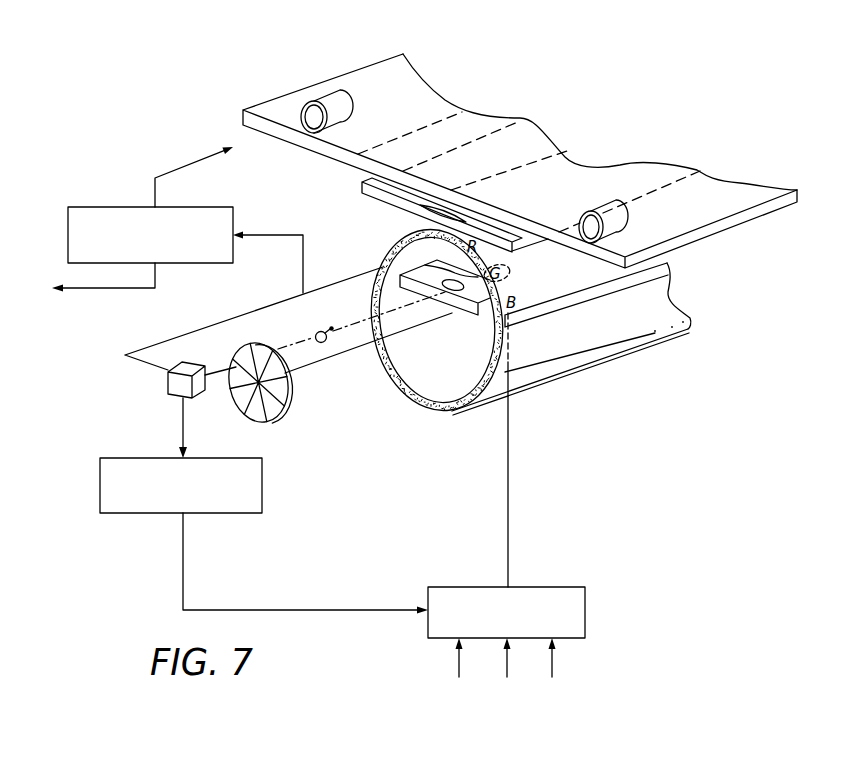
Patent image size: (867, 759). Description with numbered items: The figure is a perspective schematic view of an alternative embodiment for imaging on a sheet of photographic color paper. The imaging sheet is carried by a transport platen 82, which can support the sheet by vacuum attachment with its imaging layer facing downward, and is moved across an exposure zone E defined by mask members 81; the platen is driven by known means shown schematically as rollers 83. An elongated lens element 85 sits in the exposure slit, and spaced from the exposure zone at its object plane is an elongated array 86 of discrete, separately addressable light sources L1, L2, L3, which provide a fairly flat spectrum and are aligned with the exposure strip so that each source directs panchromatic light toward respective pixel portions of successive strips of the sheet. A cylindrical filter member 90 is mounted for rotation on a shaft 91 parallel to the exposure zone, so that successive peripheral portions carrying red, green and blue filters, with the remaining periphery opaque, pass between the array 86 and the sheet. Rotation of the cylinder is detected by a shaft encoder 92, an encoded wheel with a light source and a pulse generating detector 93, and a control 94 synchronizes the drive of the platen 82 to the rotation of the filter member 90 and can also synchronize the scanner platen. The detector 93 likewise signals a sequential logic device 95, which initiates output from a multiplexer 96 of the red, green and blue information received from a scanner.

The mask members 81 is at (362, 187).
The transport platen 82 is at (742, 190).
The rollers 83 is at (348, 114).
The elongated lens element 85 is at (440, 203).
The elongated array 86 is at (428, 298).
The cylindrical filter member 90 is at (458, 411).
The shaft 91 is at (320, 343).
The shaft encoder 92 is at (272, 330).
The pulse generating detector 93 is at (195, 397).
The control 94 is at (93, 206).
The sequential logic device 95 is at (262, 494).
The multiplexer 96 is at (580, 587).
The exposure zone E is at (560, 164).
The light source L1 is at (398, 292).
The light source L2 is at (398, 264).
The light source L3 is at (503, 266).